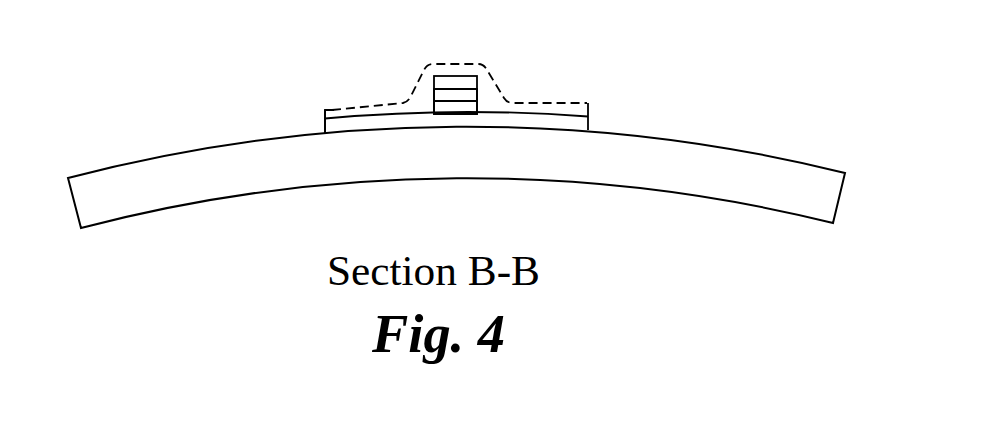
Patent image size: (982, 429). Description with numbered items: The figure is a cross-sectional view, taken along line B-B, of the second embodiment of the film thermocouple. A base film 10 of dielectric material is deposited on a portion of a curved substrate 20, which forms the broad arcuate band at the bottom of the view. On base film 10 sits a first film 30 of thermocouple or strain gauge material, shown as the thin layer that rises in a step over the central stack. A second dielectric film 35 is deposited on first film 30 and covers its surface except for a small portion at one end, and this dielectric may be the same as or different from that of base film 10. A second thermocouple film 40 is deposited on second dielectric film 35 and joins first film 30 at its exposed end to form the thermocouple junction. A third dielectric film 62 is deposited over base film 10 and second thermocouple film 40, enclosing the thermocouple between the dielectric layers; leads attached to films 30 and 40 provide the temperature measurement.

The base film 10 is at (578, 123).
The substrate 20 is at (763, 167).
The first film 30 is at (418, 105).
The second dielectric film 35 is at (477, 97).
The second thermocouple film 40 is at (477, 80).
The third dielectric film 62 is at (330, 112).